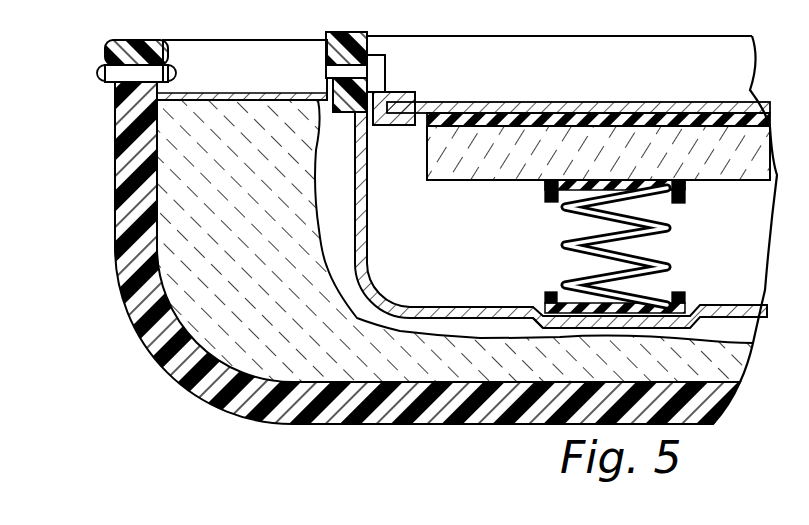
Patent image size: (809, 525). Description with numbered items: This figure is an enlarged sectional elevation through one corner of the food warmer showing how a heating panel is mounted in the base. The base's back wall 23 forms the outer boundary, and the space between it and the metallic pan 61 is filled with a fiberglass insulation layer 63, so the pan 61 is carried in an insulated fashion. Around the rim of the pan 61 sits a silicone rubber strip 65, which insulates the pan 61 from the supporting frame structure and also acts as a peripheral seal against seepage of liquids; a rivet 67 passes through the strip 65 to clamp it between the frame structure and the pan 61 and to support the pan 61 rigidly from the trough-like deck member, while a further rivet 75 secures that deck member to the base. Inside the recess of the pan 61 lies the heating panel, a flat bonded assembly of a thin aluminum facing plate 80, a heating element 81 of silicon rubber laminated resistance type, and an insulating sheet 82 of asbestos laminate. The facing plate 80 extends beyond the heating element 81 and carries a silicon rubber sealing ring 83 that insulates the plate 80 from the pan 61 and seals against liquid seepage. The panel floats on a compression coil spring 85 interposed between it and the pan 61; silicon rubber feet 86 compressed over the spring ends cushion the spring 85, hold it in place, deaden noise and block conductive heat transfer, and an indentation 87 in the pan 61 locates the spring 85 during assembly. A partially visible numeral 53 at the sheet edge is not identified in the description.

The back wall 23 is at (114, 188).
The fiberglass insulation layer 63 is at (250, 221).
The rivet 75 is at (100, 84).
The silicone rubber strip 65 is at (353, 33).
The rivet 67 is at (378, 68).
The silicon rubber sealing ring 83 is at (413, 97).
The aluminum facing plate 80 is at (513, 101).
The heating element 81 is at (560, 119).
The insulating sheet 82 is at (623, 133).
The metallic pan 61 is at (372, 255).
The silicon rubber foot 86 is at (677, 192).
The compression coil spring 85 is at (670, 230).
The indentation 87 is at (547, 307).
The lid 53 is at (247, 20).